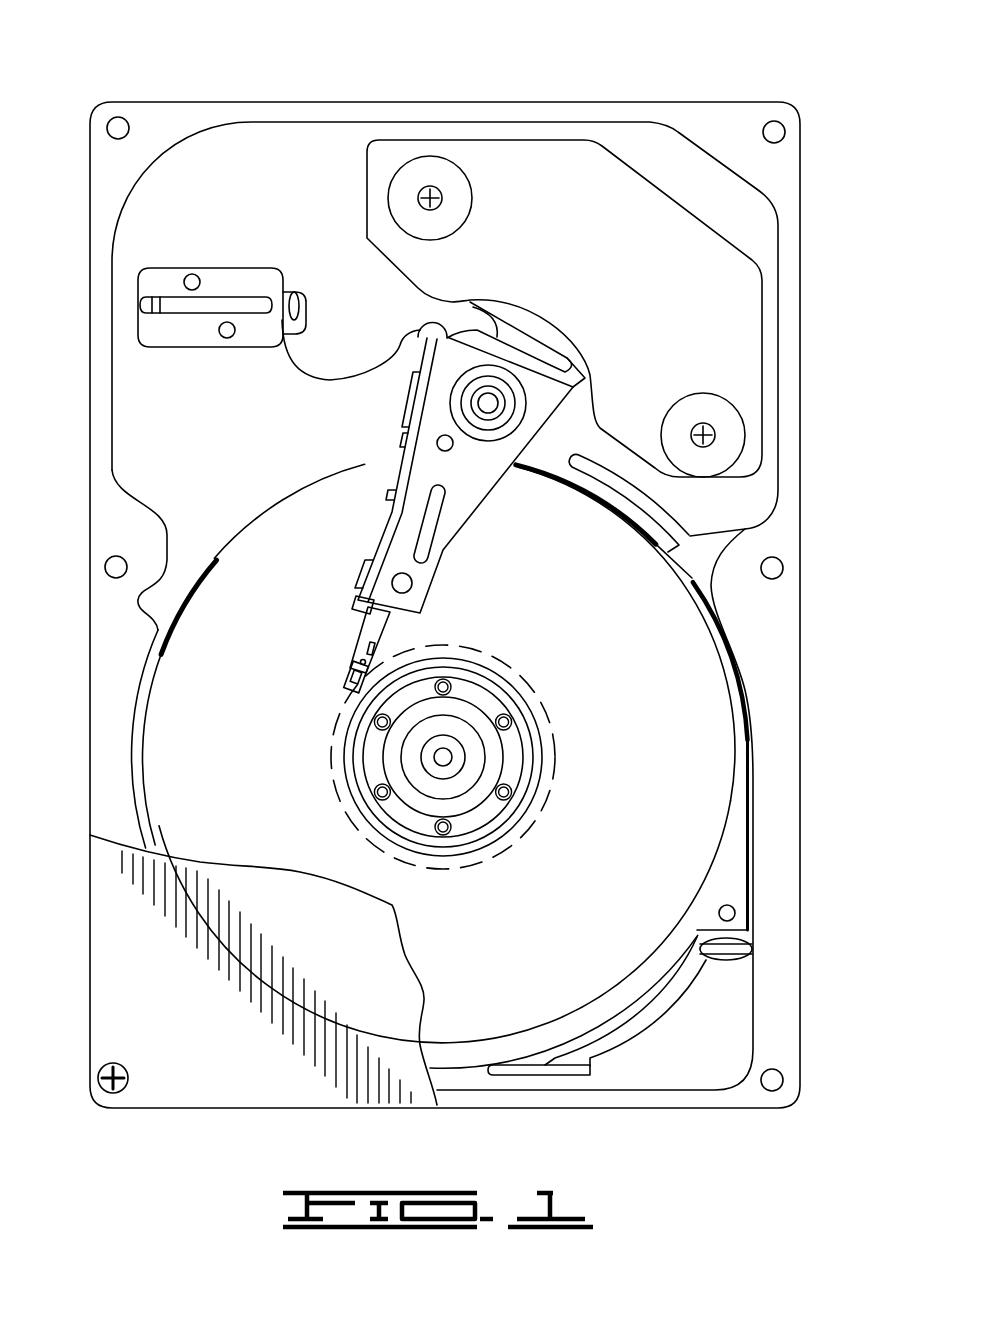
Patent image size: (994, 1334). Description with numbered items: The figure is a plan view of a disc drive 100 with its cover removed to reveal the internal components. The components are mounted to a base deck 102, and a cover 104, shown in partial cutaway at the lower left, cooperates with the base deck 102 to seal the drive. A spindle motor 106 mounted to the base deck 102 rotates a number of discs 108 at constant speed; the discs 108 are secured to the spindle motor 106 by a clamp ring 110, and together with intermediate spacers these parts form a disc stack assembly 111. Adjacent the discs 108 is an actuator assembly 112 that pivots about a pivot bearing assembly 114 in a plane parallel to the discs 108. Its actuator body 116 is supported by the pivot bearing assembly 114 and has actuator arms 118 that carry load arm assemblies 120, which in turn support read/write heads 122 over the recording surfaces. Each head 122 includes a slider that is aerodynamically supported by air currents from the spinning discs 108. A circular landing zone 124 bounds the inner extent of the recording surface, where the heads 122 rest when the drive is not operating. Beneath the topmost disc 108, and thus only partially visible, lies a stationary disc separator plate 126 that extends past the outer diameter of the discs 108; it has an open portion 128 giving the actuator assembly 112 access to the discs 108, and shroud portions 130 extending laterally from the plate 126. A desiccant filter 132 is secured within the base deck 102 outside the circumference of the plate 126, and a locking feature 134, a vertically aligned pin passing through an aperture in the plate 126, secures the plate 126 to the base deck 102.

The disc drive 100 is at (190, 55).
The base deck 102 is at (787, 297).
The cover 104 is at (142, 970).
The spindle motor 106 is at (572, 710).
The discs 108 is at (700, 750).
The clamp ring 110 is at (515, 765).
The disc stack assembly 111 is at (682, 814).
The actuator assembly 112 is at (378, 410).
The pivot bearing assembly 114 is at (492, 418).
The actuator body 116 is at (465, 490).
The actuator arms 118 is at (420, 570).
The load arm assemblies 120 is at (338, 626).
The read/write heads 122 is at (348, 671).
The landing zone 124 is at (535, 668).
The stationary disc separator plate 126 is at (733, 667).
The open portion 128 is at (296, 483).
The shroud portions 130 is at (204, 568).
The desiccant filter 132 is at (737, 962).
The locking feature 134 is at (736, 911).